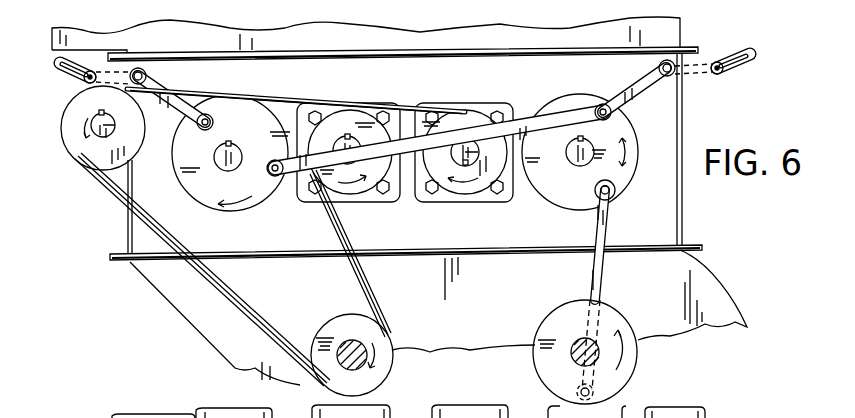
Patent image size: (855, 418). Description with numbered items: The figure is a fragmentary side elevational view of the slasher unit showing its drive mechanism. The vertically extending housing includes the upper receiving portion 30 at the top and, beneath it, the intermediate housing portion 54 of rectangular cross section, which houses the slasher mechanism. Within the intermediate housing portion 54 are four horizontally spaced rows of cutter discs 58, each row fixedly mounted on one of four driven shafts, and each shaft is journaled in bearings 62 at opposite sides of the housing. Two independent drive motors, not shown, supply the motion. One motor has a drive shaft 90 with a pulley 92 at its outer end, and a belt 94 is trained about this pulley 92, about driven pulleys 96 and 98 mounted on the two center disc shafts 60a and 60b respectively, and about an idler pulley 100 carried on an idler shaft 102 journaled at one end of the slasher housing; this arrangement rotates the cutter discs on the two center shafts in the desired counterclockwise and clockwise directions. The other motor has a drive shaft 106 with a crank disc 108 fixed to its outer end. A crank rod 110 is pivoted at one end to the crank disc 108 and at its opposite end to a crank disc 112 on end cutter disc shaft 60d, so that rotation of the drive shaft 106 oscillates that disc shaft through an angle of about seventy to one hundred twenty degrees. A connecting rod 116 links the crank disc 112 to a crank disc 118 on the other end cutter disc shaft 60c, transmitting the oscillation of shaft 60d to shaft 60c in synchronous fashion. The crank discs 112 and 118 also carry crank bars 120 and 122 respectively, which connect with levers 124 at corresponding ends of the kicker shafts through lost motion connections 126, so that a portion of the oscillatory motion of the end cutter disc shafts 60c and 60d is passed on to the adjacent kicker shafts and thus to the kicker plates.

The upper receiving portion 30 is at (678, 34).
The intermediate housing portion 54 is at (682, 120).
The cutter discs 58 is at (722, 290).
The disc shaft 60a is at (340, 195).
The disc shaft 60b is at (478, 195).
The end cutter disc shaft 60c is at (222, 157).
The end cutter disc shaft 60d is at (572, 165).
The bearings 62 is at (232, 408).
The drive shaft 90 is at (350, 340).
The pulley 92 is at (325, 318).
The belt 94 is at (262, 322).
The driven pulley 96 is at (326, 112).
The driven pulley 98 is at (468, 108).
The idler pulley 100 is at (62, 120).
The idler shaft 102 is at (115, 133).
The drive shaft 106 is at (580, 340).
The crank disc 108 is at (637, 360).
The crank rod 110 is at (600, 270).
The crank disc 112 is at (628, 180).
The connecting rod 116 is at (492, 112).
The crank disc 118 is at (233, 161).
The crank bar 120 is at (632, 95).
The crank bar 122 is at (182, 95).
The levers 124 is at (138, 70).
The lost motion connections 126 is at (82, 80).